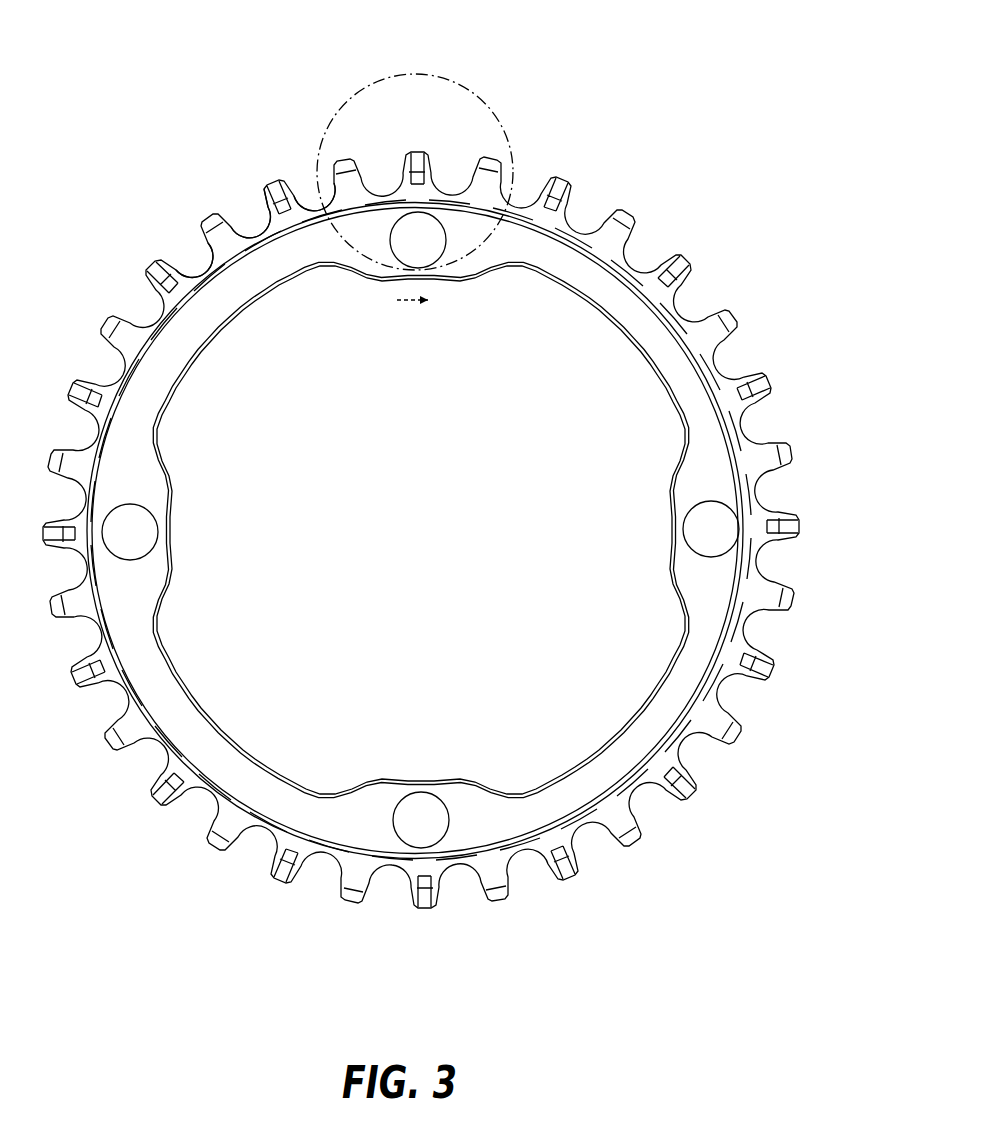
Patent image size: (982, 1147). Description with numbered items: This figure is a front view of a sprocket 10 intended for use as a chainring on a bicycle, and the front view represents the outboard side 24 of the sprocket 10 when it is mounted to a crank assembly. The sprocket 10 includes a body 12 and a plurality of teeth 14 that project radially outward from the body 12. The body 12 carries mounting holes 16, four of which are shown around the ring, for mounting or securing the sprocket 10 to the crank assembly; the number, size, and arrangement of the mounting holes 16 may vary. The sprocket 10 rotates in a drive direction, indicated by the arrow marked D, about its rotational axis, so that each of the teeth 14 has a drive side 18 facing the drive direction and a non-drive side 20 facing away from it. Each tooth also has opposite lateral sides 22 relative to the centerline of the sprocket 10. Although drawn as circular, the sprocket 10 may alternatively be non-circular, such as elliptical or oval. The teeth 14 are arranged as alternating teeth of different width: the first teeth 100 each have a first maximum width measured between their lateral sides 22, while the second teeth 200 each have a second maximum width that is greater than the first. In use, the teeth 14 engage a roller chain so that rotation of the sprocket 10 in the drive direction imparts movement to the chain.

The sprocket 10 is at (180, 67).
The body 12 is at (183, 330).
The teeth 14 is at (155, 270).
The mounting holes 16 is at (141, 537).
The drive side 18 is at (292, 185).
The non-drive side 20 is at (262, 200).
The lateral sides 22 is at (230, 247).
The outboard side 24 is at (167, 165).
The first teeth 100 is at (740, 312).
The second teeth 200 is at (690, 253).